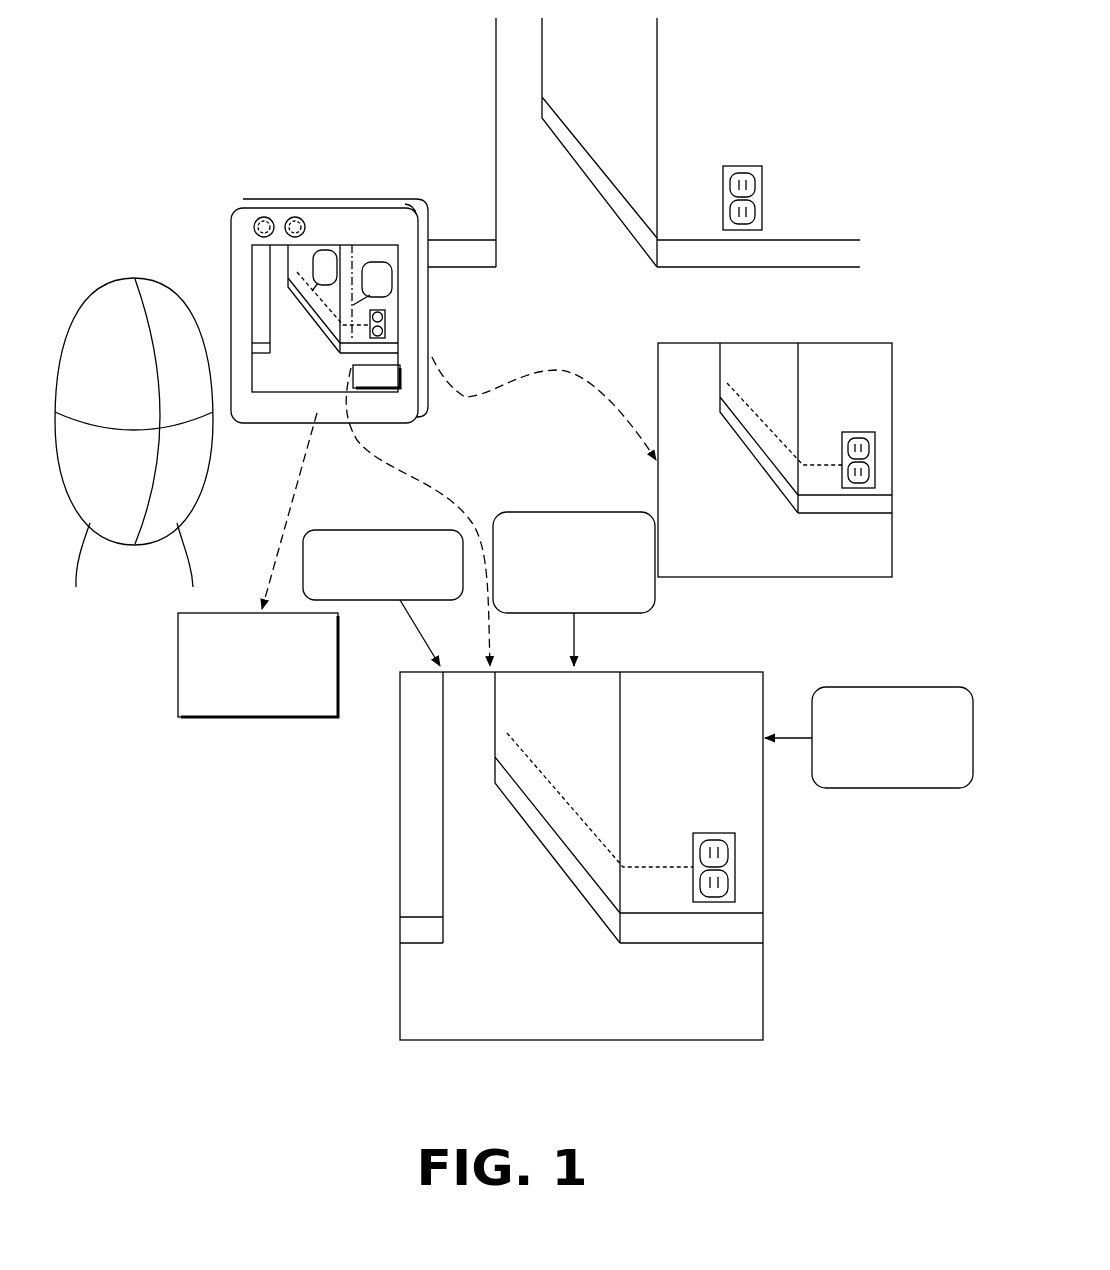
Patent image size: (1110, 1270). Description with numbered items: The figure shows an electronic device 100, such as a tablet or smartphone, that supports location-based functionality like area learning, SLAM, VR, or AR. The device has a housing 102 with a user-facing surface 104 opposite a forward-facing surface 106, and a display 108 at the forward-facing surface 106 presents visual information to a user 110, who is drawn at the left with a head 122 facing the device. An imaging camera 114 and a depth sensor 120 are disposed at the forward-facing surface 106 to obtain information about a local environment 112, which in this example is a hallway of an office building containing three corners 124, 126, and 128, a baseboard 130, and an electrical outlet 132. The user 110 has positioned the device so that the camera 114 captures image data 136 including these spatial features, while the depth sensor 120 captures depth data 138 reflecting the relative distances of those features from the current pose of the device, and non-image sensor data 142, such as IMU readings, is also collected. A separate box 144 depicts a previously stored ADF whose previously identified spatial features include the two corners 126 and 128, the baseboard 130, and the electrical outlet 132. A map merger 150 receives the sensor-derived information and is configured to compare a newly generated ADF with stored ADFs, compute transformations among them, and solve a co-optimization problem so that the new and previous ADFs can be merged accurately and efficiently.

The electronic device 100 is at (332, 306).
The housing 102 is at (428, 331).
The surface 104 is at (293, 414).
The surface 106 is at (433, 402).
The display 108 is at (376, 377).
The user 110 is at (134, 437).
The local environment 112 is at (646, 481).
The imaging camera 114 is at (257, 216).
The depth sensor 120 is at (281, 211).
The user head 122 is at (94, 292).
The corner 124 is at (496, 225).
The corner 126 is at (657, 95).
The corner 128 is at (542, 61).
The baseboard 130 is at (632, 220).
The electrical outlet 132 is at (762, 191).
The image data 136 is at (382, 530).
The depth data 138 is at (577, 512).
The non-image sensor data 142 is at (901, 687).
The depth map 144 is at (892, 418).
The map merger 150 is at (245, 687).